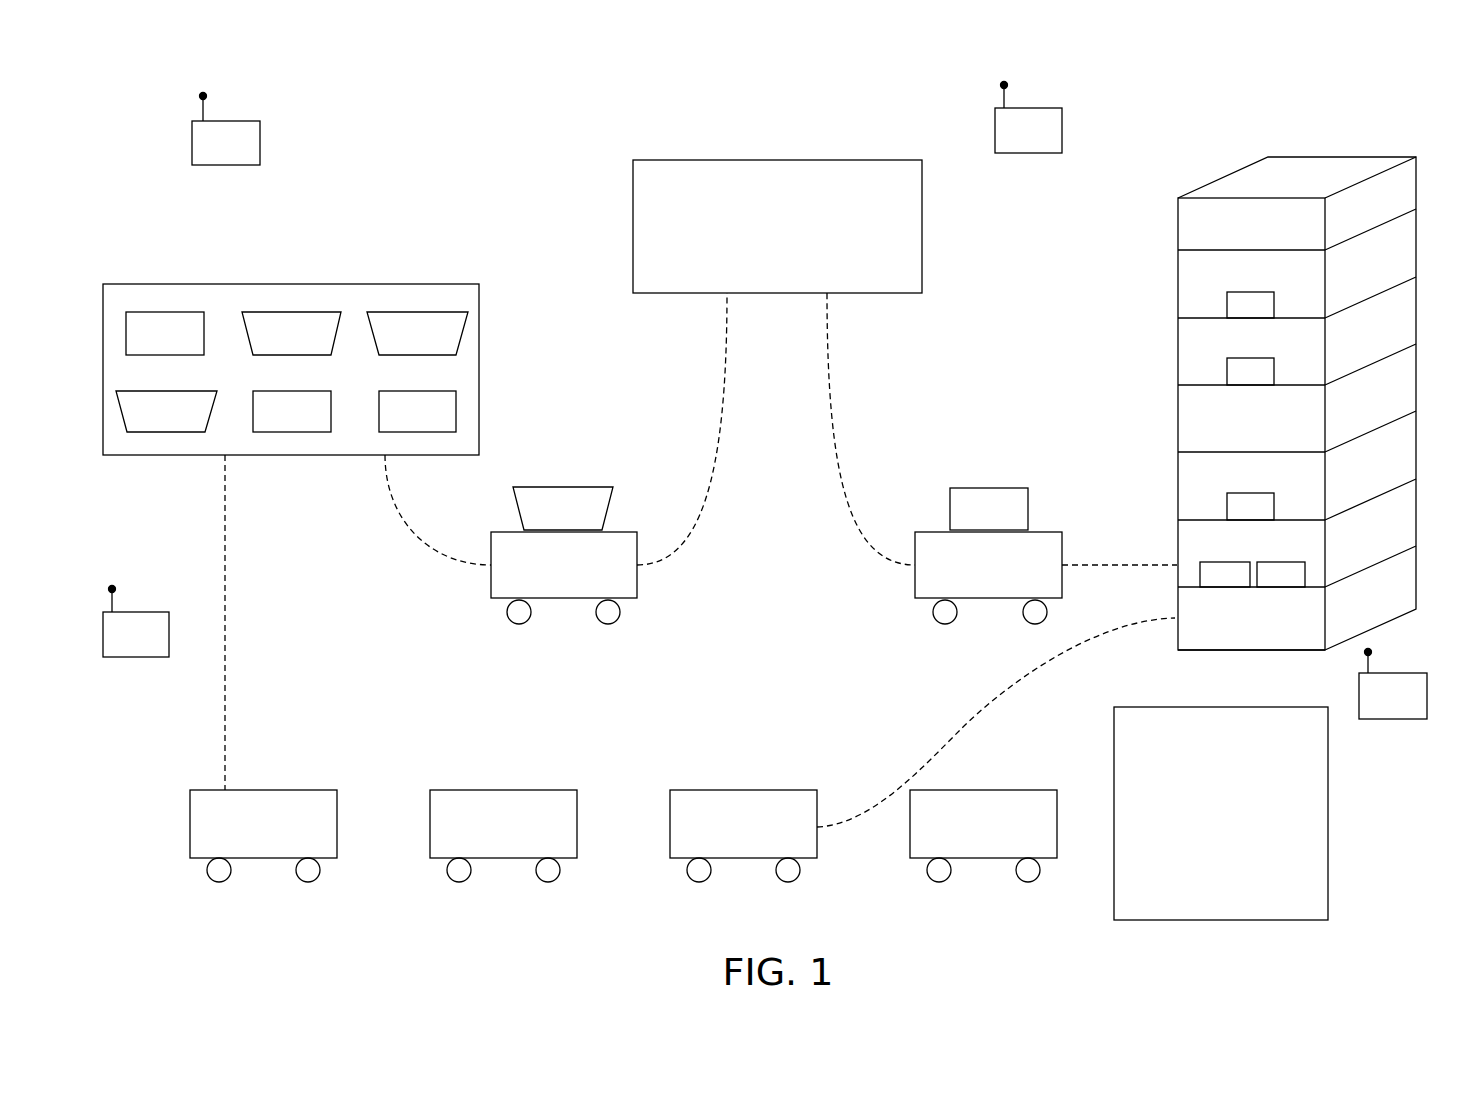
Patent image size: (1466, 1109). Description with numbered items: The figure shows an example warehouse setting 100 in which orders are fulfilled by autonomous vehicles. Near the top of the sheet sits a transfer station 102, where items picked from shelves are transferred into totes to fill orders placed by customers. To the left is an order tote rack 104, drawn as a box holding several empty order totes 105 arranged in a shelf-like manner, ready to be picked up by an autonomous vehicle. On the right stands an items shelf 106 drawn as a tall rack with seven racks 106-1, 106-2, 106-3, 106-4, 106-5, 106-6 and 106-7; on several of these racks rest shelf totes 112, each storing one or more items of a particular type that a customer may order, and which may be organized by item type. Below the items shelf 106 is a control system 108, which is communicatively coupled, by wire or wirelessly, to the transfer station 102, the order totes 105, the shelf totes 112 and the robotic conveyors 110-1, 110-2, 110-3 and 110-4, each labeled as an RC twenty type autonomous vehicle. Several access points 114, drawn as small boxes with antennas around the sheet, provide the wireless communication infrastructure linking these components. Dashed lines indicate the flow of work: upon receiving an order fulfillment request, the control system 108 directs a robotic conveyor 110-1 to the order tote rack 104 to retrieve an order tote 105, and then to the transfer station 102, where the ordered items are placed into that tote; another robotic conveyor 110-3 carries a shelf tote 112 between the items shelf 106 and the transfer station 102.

The warehouse setting 100 is at (1391, 104).
The transfer station 102 is at (840, 160).
The order tote rack 104 is at (400, 284).
The order tote 105 is at (165, 312).
The items shelf 106 is at (1247, 375).
The rack 106-1 is at (1185, 232).
The rack 106-2 is at (1185, 286).
The rack 106-3 is at (1185, 353).
The rack 106-4 is at (1185, 421).
The rack 106-5 is at (1185, 472).
The rack 106-6 is at (1185, 556).
The rack 106-7 is at (1185, 615).
The control system 108 is at (1228, 920).
The robotic conveyor 110-1 is at (637, 600).
The robotic conveyor 110-2 is at (505, 790).
The robotic conveyor 110-3 is at (915, 578).
The robotic conveyor 110-4 is at (985, 792).
The shelf tote 112 is at (1248, 292).
The access point 114 is at (225, 165).